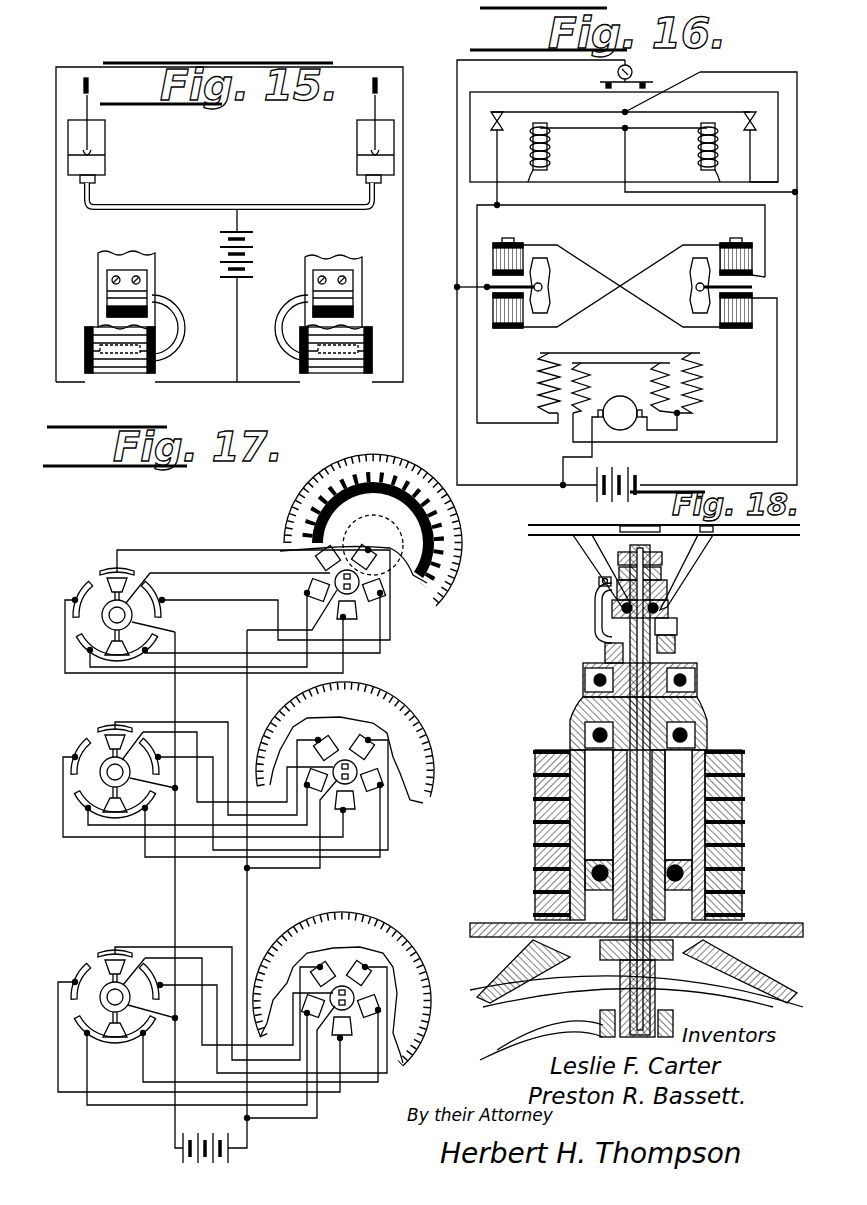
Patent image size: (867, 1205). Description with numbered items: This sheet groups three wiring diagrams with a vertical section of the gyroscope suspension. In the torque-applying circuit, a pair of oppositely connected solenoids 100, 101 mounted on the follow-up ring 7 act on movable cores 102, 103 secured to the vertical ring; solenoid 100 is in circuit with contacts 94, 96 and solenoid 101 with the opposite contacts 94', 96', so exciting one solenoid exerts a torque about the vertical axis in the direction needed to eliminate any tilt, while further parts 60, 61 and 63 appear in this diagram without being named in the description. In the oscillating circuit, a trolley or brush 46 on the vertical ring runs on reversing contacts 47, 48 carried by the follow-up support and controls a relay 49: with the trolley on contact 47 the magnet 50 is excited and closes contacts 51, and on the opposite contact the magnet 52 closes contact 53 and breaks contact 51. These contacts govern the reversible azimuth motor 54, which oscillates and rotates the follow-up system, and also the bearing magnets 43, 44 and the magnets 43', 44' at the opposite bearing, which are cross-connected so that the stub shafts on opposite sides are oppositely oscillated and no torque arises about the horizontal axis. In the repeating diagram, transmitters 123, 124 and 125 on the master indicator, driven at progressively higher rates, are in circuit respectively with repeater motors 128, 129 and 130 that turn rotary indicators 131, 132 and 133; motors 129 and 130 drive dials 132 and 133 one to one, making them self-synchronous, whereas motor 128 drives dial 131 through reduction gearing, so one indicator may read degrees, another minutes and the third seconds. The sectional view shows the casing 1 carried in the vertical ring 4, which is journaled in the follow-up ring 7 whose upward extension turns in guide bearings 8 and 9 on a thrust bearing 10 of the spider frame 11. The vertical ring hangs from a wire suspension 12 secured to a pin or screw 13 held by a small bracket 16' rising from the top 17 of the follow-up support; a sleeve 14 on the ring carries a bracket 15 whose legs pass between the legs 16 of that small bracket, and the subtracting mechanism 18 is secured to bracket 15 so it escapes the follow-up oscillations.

In FIG. 18, the casing 1 is at (662, 792).
In FIG. 18, the vertical ring 4 is at (636, 1018).
In FIG. 18, the follow-up ring 7 is at (760, 969).
In FIG. 18, the guide bearing 8 is at (690, 735).
In FIG. 18, the guide bearing 9 is at (638, 867).
In FIG. 18, the thrust bearing 10 is at (697, 670).
In FIG. 18, the spider frame 11 is at (575, 700).
In FIG. 18, the wire suspension 12 is at (620, 965).
In FIG. 18, the pin or screw 13 is at (650, 549).
In FIG. 18, the sleeve 14 is at (672, 643).
In FIG. 18, the bracket 15 is at (695, 580).
In FIG. 18, the legs 16 is at (657, 614).
In FIG. 18, the small bracket 16' is at (584, 651).
In FIG. 18, the top of the follow-up support 17 is at (598, 630).
In FIG. 18, the mechanism 18 is at (745, 537).
In FIG. 16, the magnet 43 is at (741, 249).
In FIG. 16, the magnet 43' is at (508, 248).
In FIG. 16, the magnet 44 is at (675, 350).
In FIG. 16, the magnet 44' is at (518, 307).
In FIG. 16, the trolley or brush 46 is at (636, 63).
In FIG. 16, the reversing contact 47 is at (600, 82).
In FIG. 16, the reversing contact 48 is at (668, 89).
In FIG. 16, the relay 49 is at (645, 153).
In FIG. 16, the magnet 50 is at (538, 159).
In FIG. 16, the contacts 51 is at (506, 160).
In FIG. 16, the magnet 52 is at (700, 159).
In FIG. 16, the contact 53 is at (748, 147).
In FIG. 16, the azimuth motor 54 is at (620, 420).
In FIG. 15, the lamp 60 is at (357, 166).
In FIG. 15, the lamp 61 is at (105, 166).
In FIG. 15, the conductor 63 is at (237, 204).
In FIG. 15, the contact 94 is at (110, 125).
In FIG. 15, the contact 94' is at (356, 125).
In FIG. 15, the contact 96 is at (103, 85).
In FIG. 15, the contact 96' is at (357, 79).
In FIG. 15, the solenoid 100 is at (120, 364).
In FIG. 15, the solenoid 101 is at (336, 365).
In FIG. 15, the movable core 102 is at (178, 306).
In FIG. 15, the movable core 103 is at (281, 310).
In FIG. 17, the transmitter 123 is at (227, 625).
In FIG. 17, the transmitter 124 is at (225, 794).
In FIG. 17, the transmitter 125 is at (222, 1026).
In FIG. 17, the repeater motor 128 is at (334, 587).
In FIG. 17, the repeater motor 129 is at (314, 802).
In FIG. 17, the repeater motor 130 is at (313, 1040).
In FIG. 17, the rotary indicator 131 is at (371, 530).
In FIG. 17, the rotary indicator 132 is at (357, 746).
In FIG. 17, the rotary indicator 133 is at (351, 989).